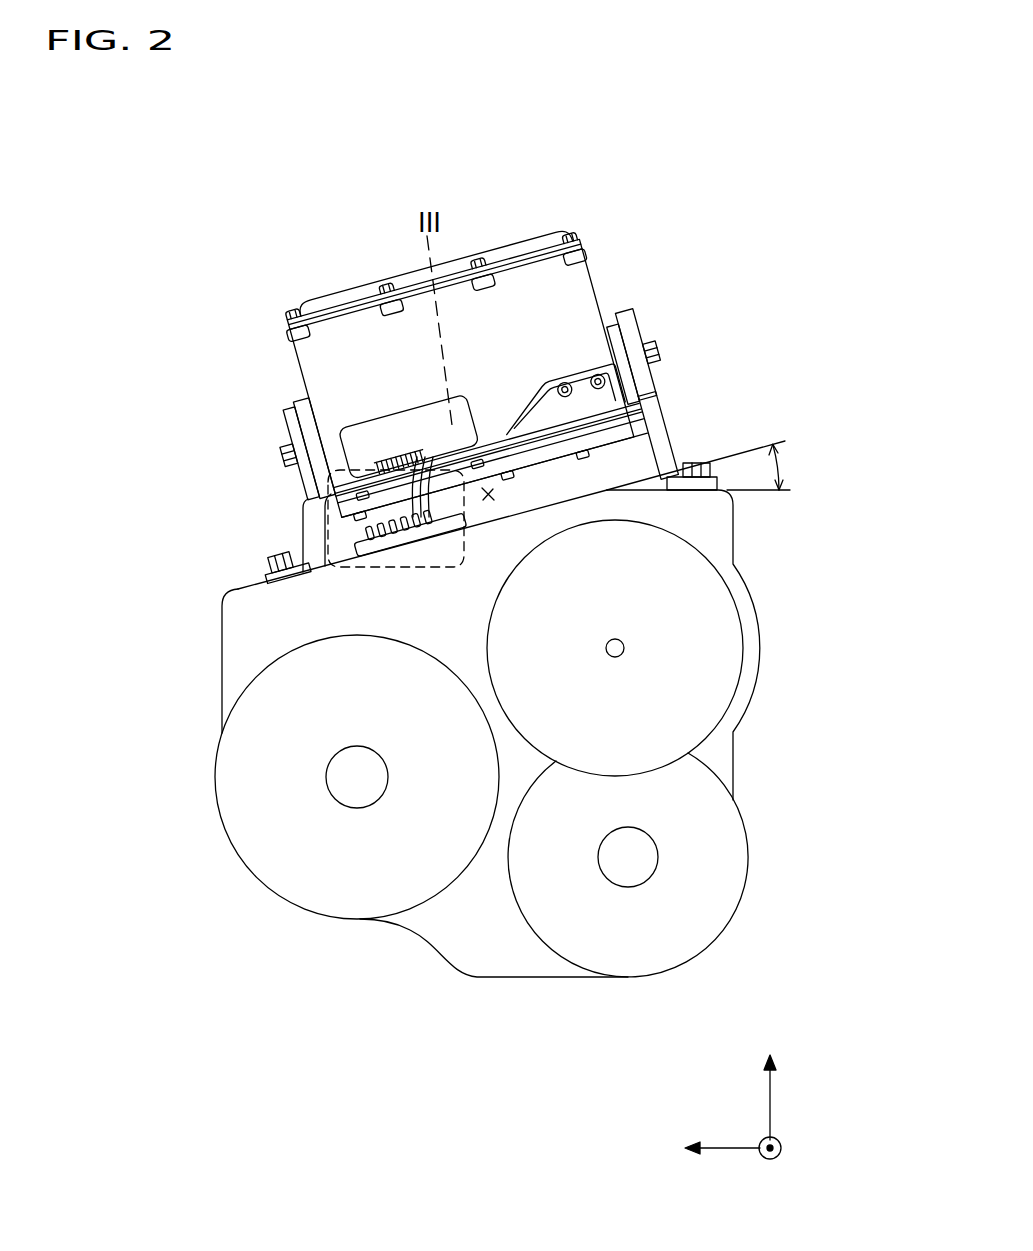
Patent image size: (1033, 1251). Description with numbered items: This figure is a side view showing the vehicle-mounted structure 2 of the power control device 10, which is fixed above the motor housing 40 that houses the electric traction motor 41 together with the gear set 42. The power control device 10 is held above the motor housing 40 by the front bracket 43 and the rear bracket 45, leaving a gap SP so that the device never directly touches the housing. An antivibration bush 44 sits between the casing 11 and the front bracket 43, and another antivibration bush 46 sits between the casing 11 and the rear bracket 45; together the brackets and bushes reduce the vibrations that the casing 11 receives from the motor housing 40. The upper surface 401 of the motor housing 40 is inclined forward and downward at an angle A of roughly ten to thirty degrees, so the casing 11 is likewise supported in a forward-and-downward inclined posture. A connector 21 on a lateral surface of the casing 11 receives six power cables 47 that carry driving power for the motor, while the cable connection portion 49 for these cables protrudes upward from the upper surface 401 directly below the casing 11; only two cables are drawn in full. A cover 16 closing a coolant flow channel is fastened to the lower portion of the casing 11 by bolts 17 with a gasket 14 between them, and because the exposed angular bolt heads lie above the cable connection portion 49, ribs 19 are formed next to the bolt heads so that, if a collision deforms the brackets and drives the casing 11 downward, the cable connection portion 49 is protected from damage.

The vehicle-mounted structure 2 is at (645, 227).
The power control device 10 is at (250, 330).
The casing 11 is at (343, 325).
The gasket 14 is at (626, 447).
The cover 16 is at (586, 457).
The bolts 17 is at (323, 520).
The ribs 19 is at (312, 540).
The connector 21 is at (396, 425).
The motor housing 40 is at (481, 946).
The electric traction motor 41 is at (357, 777).
The gear set 42 is at (617, 748).
The front bracket 43 is at (300, 546).
The antivibration bush 44 is at (297, 412).
The rear bracket 45 is at (650, 405).
The antivibration bush 46 is at (610, 330).
The power cables 47 is at (400, 530).
The cable connection portion 49 is at (430, 530).
The upper surface 401 is at (231, 584).
The gap SP is at (489, 495).
The angle A is at (707, 465).